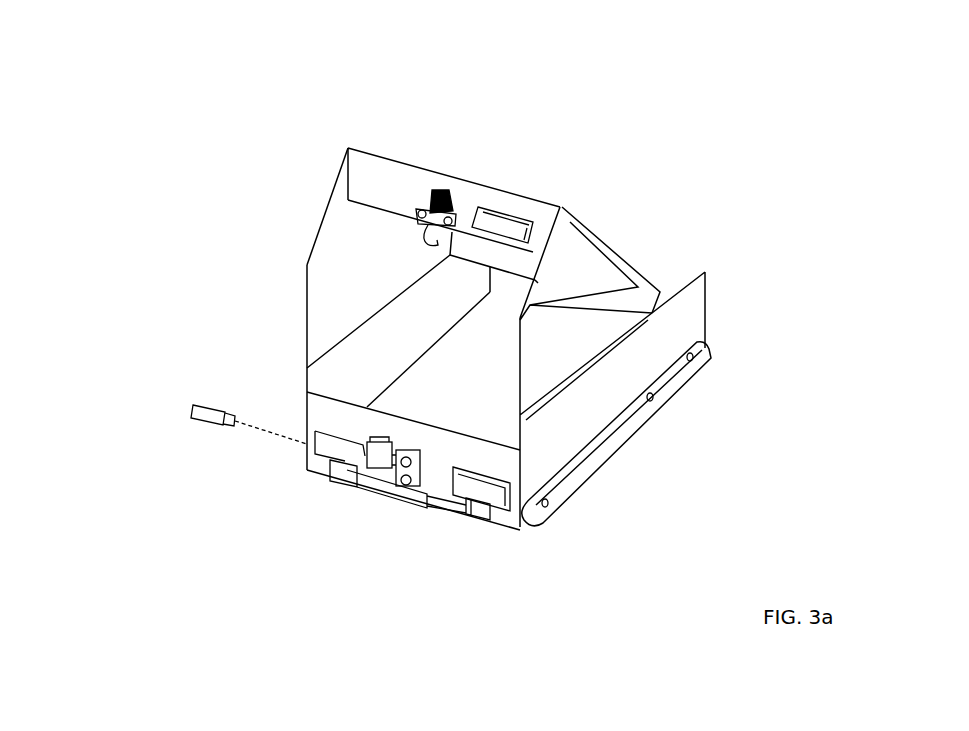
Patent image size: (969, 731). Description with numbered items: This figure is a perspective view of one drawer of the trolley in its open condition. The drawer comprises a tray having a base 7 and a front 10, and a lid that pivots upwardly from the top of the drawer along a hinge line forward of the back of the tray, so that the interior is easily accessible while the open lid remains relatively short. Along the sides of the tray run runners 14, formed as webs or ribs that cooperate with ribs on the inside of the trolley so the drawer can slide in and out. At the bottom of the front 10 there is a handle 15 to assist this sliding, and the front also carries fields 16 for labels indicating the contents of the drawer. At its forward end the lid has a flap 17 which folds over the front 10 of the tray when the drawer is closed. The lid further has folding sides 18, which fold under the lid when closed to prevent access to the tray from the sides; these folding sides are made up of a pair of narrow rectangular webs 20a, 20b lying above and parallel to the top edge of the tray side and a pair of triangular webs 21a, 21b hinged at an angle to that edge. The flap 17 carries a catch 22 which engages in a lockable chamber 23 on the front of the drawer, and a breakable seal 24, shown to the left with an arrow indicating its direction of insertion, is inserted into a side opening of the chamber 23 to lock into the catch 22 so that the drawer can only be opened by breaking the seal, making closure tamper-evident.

The base 7 is at (459, 401).
The front 10 is at (327, 418).
The runners 14 is at (637, 431).
The handle 15 is at (347, 486).
The fields 16 is at (507, 217).
The flap 17 is at (370, 180).
The folding sides 18 is at (583, 277).
The narrow rectangular web 20a is at (305, 369).
The narrow rectangular web 20b is at (306, 391).
The triangular web 21a is at (340, 217).
The triangular web 21b is at (322, 282).
The catch 22 is at (412, 215).
The lockable chamber 23 is at (408, 487).
The breakable seal 24 is at (190, 409).